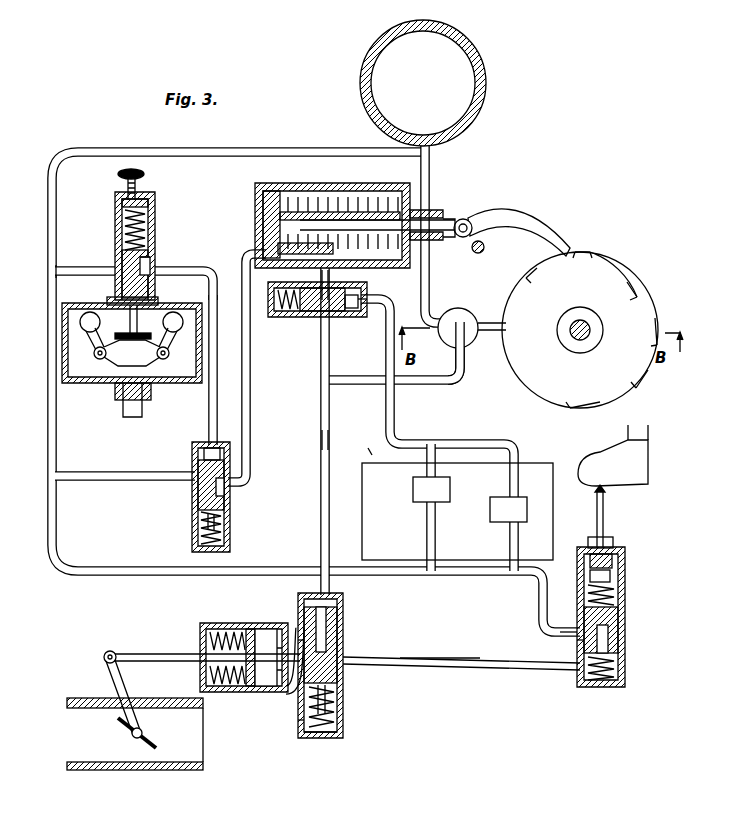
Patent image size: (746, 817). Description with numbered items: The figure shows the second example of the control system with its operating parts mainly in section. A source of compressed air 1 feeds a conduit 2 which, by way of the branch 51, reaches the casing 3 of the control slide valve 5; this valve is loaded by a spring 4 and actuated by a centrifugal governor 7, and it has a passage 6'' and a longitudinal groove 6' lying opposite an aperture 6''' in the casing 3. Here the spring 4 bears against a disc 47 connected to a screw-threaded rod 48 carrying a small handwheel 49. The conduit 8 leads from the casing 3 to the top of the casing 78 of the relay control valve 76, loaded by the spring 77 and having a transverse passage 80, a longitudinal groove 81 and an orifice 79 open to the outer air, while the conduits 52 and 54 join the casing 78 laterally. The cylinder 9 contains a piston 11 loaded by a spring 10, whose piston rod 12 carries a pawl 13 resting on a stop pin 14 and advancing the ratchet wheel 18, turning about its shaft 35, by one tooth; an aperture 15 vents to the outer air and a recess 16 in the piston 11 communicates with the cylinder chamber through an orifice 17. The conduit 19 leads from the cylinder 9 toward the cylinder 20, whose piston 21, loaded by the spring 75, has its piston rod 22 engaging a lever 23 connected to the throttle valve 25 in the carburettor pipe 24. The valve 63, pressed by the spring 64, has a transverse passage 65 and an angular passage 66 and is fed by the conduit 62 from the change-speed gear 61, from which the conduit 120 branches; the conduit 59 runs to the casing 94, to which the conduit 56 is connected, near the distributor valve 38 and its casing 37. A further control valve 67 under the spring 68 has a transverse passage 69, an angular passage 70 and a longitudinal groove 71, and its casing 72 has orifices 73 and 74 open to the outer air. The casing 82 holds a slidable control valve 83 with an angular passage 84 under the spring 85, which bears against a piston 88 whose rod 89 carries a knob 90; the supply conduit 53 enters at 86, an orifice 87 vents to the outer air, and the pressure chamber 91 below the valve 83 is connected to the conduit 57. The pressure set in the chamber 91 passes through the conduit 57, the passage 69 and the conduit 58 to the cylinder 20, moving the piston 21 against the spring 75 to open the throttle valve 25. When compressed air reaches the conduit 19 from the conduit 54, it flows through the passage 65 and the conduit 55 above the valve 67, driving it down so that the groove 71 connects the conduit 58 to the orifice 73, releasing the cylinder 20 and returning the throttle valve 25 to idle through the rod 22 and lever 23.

The source of compressed air 1 is at (486, 95).
The conduit 2 is at (233, 152).
The casing 3 is at (150, 225).
The spring 4 is at (125, 226).
The control slide valve 5 is at (122, 256).
The longitudinal groove 6' is at (157, 269).
The passage 6'' is at (120, 295).
The aperture 6''' is at (163, 250).
The centrifugal governor 7 is at (132, 360).
The conduit 8 is at (217, 378).
The cylinder 9 is at (257, 196).
The spring 10 is at (358, 212).
The piston 11 is at (303, 196).
The piston rod 12 is at (345, 206).
The pawl 13 is at (522, 222).
The stop pin 14 is at (482, 252).
The aperture 15 is at (418, 204).
The recess 16 is at (286, 262).
The orifice 17 is at (330, 248).
The ratchet wheel 18 is at (538, 373).
The conduit 19 is at (331, 282).
The cylinder 20 is at (222, 692).
The piston 21 is at (250, 688).
The piston rod 22 is at (157, 653).
The lever 23 is at (122, 682).
The carburettor pipe 24 is at (100, 762).
The throttle valve 25 is at (150, 748).
The cam shaft 35 is at (580, 342).
The casing 37 is at (630, 280).
The distributor valve 38 is at (492, 332).
The disc 47 is at (122, 203).
The screw-threaded rod 48 is at (140, 188).
The small handwheel 49 is at (118, 176).
The line 51 is at (73, 268).
The conduit 52 is at (130, 476).
The compressed air supply conduit 53 is at (466, 578).
The conduit 54 is at (321, 378).
The conduit 55 is at (329, 440).
The conduit 56 is at (360, 388).
The conduit 57 is at (452, 652).
The conduit 58 is at (286, 690).
The conduit 59 is at (431, 283).
The change-speed gear 61 is at (378, 500).
The conduit 62 is at (395, 405).
The valve 63 is at (317, 309).
The spring 64 is at (277, 313).
The transverse passage 65 is at (344, 316).
The angular passage 66 is at (369, 318).
The control valve 67 is at (343, 628).
The spring 68 is at (343, 716).
The transverse passage 69 is at (343, 652).
The angular passage 70 is at (337, 606).
The longitudinal groove 71 is at (298, 620).
The casing 72 is at (320, 738).
The orifice 73 is at (298, 642).
The orifice 74 is at (300, 724).
The spring 75 is at (242, 629).
The control valve 76 is at (192, 498).
The spring 77 is at (226, 534).
The casing 78 is at (198, 532).
The orifice 79 is at (226, 500).
The transverse passage 80 is at (204, 462).
The longitudinal groove 81 is at (224, 487).
The casing 82 is at (625, 586).
The control valve 83 is at (618, 608).
The angular passage 84 is at (608, 628).
The spring 85 is at (612, 572).
The communication 86 is at (578, 640).
The orifice 87 is at (577, 622).
The piston 88 is at (618, 558).
The rod 89 is at (604, 518).
The knob 90 is at (606, 489).
The pressure chamber 91 is at (618, 652).
The casing 94 is at (470, 316).
The conduit 120 is at (368, 449).